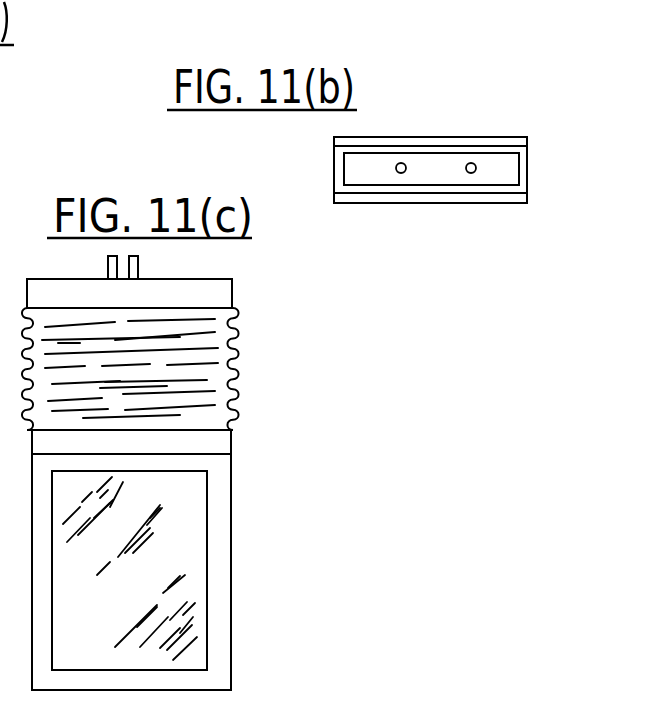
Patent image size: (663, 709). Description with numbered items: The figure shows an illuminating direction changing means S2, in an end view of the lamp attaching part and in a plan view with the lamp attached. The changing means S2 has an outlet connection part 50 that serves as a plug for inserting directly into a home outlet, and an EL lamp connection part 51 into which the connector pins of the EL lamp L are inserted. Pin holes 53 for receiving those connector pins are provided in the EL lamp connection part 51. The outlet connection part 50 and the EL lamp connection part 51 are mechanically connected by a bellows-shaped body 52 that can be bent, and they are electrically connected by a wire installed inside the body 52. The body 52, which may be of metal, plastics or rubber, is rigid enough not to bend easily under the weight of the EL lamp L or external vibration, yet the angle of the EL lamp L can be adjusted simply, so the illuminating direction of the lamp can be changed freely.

In FIG. 11C, the outlet connection part 50 is at (221, 294).
In FIG. 11B, the EL lamp connection part 51 is at (520, 165).
In FIG. 11C, the EL lamp connection part 51 is at (220, 444).
In FIG. 11B, the bellows-shaped body 52 is at (482, 140).
In FIG. 11C, the bellows-shaped body 52 is at (215, 357).
In FIG. 11B, the pin holes 53 is at (401, 163).
In FIG. 11B, the changing means S2 is at (502, 205).
In FIG. 11C, the changing means S2 is at (242, 382).
In FIG. 11C, the EL lamp L is at (233, 518).